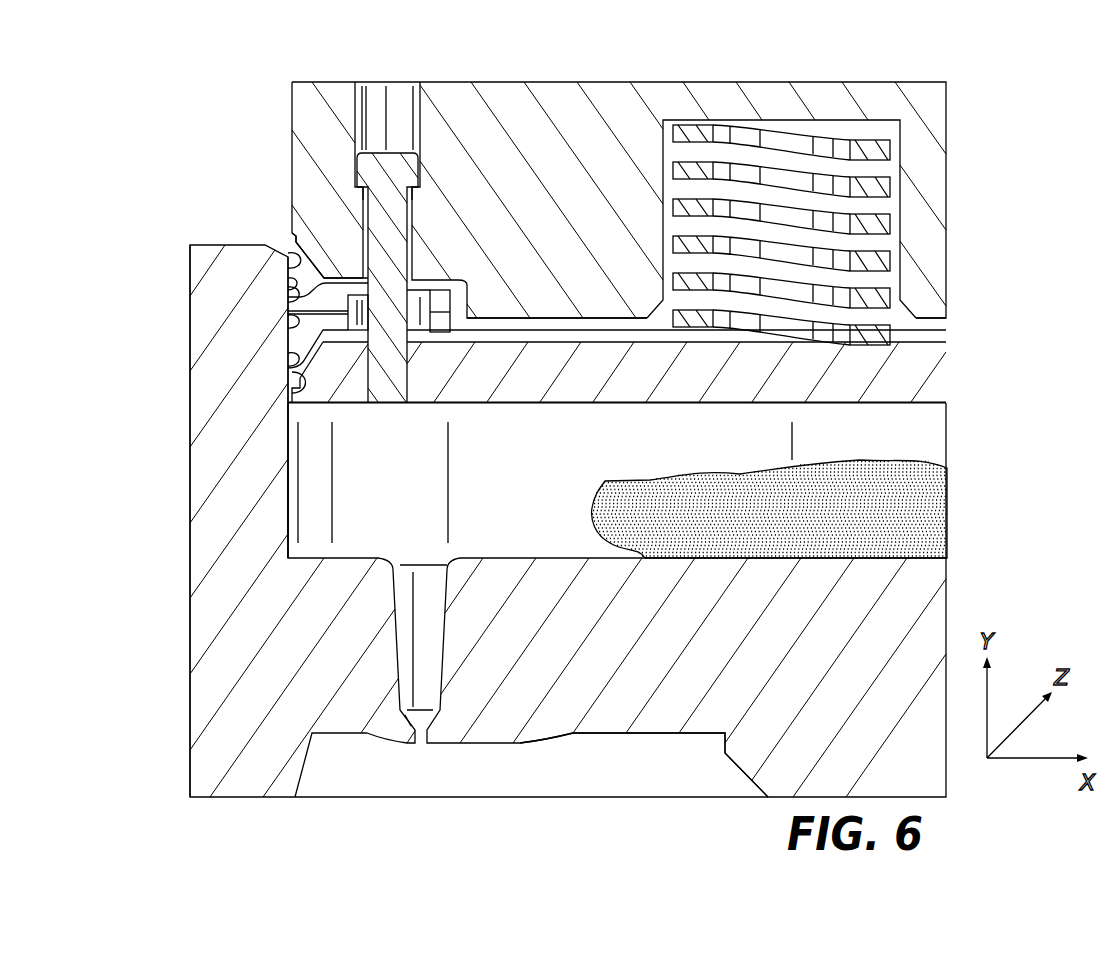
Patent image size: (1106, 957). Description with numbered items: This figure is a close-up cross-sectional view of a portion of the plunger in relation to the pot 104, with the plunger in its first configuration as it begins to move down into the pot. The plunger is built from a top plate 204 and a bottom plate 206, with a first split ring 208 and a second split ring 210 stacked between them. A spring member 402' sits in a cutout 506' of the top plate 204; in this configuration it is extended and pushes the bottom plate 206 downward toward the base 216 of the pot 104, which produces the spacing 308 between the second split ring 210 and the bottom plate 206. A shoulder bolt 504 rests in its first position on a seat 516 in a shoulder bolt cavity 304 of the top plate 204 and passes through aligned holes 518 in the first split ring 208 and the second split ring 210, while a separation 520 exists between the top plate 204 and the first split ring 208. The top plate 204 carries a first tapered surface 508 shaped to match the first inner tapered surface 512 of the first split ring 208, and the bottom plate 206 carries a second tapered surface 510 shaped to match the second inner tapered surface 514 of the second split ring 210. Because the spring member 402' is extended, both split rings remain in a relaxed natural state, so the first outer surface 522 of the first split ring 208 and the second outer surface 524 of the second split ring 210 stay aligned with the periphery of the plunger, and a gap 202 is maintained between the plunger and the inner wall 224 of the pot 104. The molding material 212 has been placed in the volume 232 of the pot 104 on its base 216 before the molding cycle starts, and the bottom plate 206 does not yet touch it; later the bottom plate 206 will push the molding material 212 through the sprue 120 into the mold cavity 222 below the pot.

The pot 104 is at (190, 420).
The sprue 120 is at (413, 651).
The gap 202 is at (290, 338).
The top plate 204 is at (930, 138).
The bottom plate 206 is at (935, 374).
The first split ring 208 is at (327, 290).
The second split ring 210 is at (300, 347).
The molding material 212 is at (780, 528).
The base 216 is at (872, 562).
The mold cavity 222 is at (638, 768).
The inner wall 224 is at (291, 497).
The volume 232 is at (935, 421).
The shoulder bolt cavity 304 is at (404, 92).
The spacing 308 is at (937, 333).
The spring member 402' is at (781, 188).
The shoulder bolt 504 is at (420, 167).
The cutout 506' is at (840, 219).
The first tapered surface 508 is at (297, 262).
The second tapered surface 510 is at (293, 393).
The first inner tapered surface 512 is at (290, 258).
The second inner tapered surface 514 is at (310, 357).
The seat 516 is at (410, 191).
The aligned hole 518 is at (415, 307).
The separation 520 is at (422, 282).
The first outer surface 522 is at (290, 282).
The second outer surface 524 is at (290, 298).